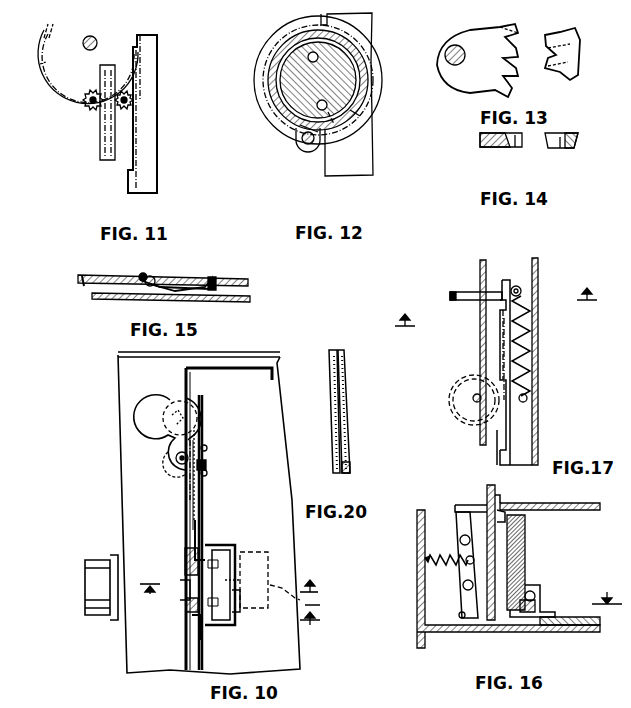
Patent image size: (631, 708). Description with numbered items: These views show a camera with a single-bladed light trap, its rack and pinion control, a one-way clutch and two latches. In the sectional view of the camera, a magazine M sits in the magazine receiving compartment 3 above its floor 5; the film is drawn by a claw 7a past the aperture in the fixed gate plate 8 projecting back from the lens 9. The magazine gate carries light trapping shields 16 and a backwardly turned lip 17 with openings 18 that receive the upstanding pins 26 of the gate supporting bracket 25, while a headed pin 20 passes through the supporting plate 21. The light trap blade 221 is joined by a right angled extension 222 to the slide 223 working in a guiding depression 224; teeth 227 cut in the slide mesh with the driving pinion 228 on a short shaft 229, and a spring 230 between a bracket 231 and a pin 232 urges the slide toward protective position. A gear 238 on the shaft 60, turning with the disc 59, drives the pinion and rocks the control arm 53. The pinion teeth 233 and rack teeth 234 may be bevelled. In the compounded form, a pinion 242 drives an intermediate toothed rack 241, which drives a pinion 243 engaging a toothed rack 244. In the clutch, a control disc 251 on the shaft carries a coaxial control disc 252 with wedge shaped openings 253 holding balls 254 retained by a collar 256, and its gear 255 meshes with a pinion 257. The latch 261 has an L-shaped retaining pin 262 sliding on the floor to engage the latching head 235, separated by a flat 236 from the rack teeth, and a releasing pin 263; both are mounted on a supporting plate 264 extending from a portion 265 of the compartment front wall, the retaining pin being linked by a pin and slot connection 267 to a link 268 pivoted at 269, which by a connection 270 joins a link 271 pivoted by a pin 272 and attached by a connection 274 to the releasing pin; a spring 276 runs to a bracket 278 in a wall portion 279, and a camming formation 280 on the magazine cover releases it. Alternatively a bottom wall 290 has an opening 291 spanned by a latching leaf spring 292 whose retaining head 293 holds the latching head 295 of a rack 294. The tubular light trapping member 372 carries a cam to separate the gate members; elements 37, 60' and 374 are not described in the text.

In FIG. 10, the magazine receiving compartment 3 is at (253, 519).
In FIG. 15, the floor 5 is at (92, 296).
In FIG. 17, the floor 5 is at (527, 361).
In FIG. 16, the floor 5 is at (570, 632).
In FIG. 10, the claw 7a is at (184, 573).
In FIG. 10, the fixed gate plate 8 is at (190, 608).
In FIG. 10, the lens 9 is at (101, 587).
In FIG. 17, the light trapping shields 16 is at (496, 317).
In FIG. 10, the backwardly turned lip 17 is at (232, 580).
In FIG. 16, the backwardly turned lip 17 is at (607, 590).
In FIG. 10, the openings 18 is at (232, 560).
In FIG. 10, the headed pin 20 is at (238, 583).
In FIG. 10, the supporting plate 21 is at (238, 596).
In FIG. 10, the gate supporting bracket 25 is at (294, 598).
In FIG. 10, the upstanding pins 26 is at (236, 546).
In FIG. 10, the section arrow 37 is at (186, 590).
In FIG. 12, the control arm 53 is at (347, 94).
In FIG. 11, the disc 59 is at (33, 66).
In FIG. 11, the shaft 60 is at (57, 48).
In FIG. 10, the shaft 60 is at (138, 412).
In FIG. 12, the lens axis 60' is at (273, 81).
In FIG. 10, the single blade 221 is at (196, 620).
In FIG. 10, the right angled extension 222 is at (190, 522).
In FIG. 10, the slide 223 is at (203, 488).
In FIG. 17, the slide 223 is at (528, 354).
In FIG. 16, the slide 223 is at (527, 615).
In FIG. 10, the guiding depression 224 is at (194, 496).
In FIG. 13, the teeth 227 is at (575, 52).
In FIG. 10, the teeth 227 is at (190, 472).
In FIG. 17, the teeth 227 is at (503, 352).
In FIG. 13, the driving pinion 228 is at (477, 60).
In FIG. 10, the driving pinion 228 is at (176, 464).
In FIG. 17, the driving pinion 228 is at (452, 400).
In FIG. 13, the short shaft 229 is at (455, 66).
In FIG. 10, the short shaft 229 is at (178, 458).
In FIG. 17, the short shaft 229 is at (475, 395).
In FIG. 10, the spring 230 is at (208, 462).
In FIG. 17, the spring 230 is at (518, 372).
In FIG. 16, the spring 230 is at (544, 592).
In FIG. 10, the bracket 231 is at (208, 472).
In FIG. 17, the bracket 231 is at (527, 399).
In FIG. 10, the pin 232 is at (215, 450).
In FIG. 17, the pin 232 is at (520, 291).
In FIG. 16, the pin 232 is at (540, 592).
In FIG. 13, the pinion teeth 233 is at (510, 35).
In FIG. 14, the pinion teeth 233 is at (516, 147).
In FIG. 13, the rack teeth 234 is at (560, 70).
In FIG. 14, the rack teeth 234 is at (560, 148).
In FIG. 17, the latching head 235 is at (498, 290).
In FIG. 17, the flat 236 is at (500, 305).
In FIG. 11, the gear 238 is at (60, 82).
In FIG. 10, the gear 238 is at (158, 427).
In FIG. 11, the intermediate toothed rack 241 is at (108, 138).
In FIG. 11, the pinion 242 is at (85, 108).
In FIG. 11, the pinion 243 is at (130, 105).
In FIG. 11, the toothed rack 244 is at (147, 148).
In FIG. 12, the control disc 251 is at (262, 95).
In FIG. 12, the control disc 252 is at (288, 100).
In FIG. 12, the wedge shaped openings 253 is at (307, 127).
In FIG. 12, the balls 254 is at (355, 115).
In FIG. 12, the gear 255 is at (330, 122).
In FIG. 12, the collar 256 is at (282, 56).
In FIG. 12, the pinion 257 is at (303, 148).
In FIG. 16, the latch 261 is at (458, 528).
In FIG. 17, the retaining pin 262 is at (492, 290).
In FIG. 16, the retaining pin 262 is at (500, 622).
In FIG. 16, the releasing pin 263 is at (512, 491).
In FIG. 17, the supporting plate 264 is at (468, 290).
In FIG. 16, the supporting plate 264 is at (470, 505).
In FIG. 17, the portion of front wall 265 is at (482, 443).
In FIG. 16, the portion of front wall 265 is at (527, 538).
In FIG. 17, the pin and slot connection 267 is at (452, 302).
In FIG. 16, the pin and slot connection 267 is at (462, 620).
In FIG. 17, the link 268 is at (450, 295).
In FIG. 16, the link 268 is at (460, 598).
In FIG. 16, the pivot 269 is at (462, 583).
In FIG. 16, the pin and slot connection 270 is at (470, 562).
In FIG. 16, the link 271 is at (463, 545).
In FIG. 16, the pin 272 is at (455, 527).
In FIG. 16, the pin and slot connection 274 is at (460, 518).
In FIG. 16, the spring 276 is at (455, 560).
In FIG. 16, the bracket 278 is at (428, 556).
In FIG. 16, the portion of front wall 279 is at (455, 614).
In FIG. 16, the camming formation 280 is at (520, 512).
In FIG. 15, the bottom wall 290 is at (248, 279).
In FIG. 15, the opening 291 is at (172, 282).
In FIG. 15, the latching leaf spring 292 is at (188, 289).
In FIG. 15, the retaining head 293 is at (143, 273).
In FIG. 15, the rack 294 is at (100, 274).
In FIG. 15, the latching head 295 is at (152, 276).
In FIG. 20, the tubular light trapping member 372 is at (345, 390).
In FIG. 20, the rail end 374 is at (348, 466).
In FIG. 15, the magazine M is at (251, 253).
In FIG. 10, the magazine M is at (257, 357).
In FIG. 16, the magazine M is at (550, 503).